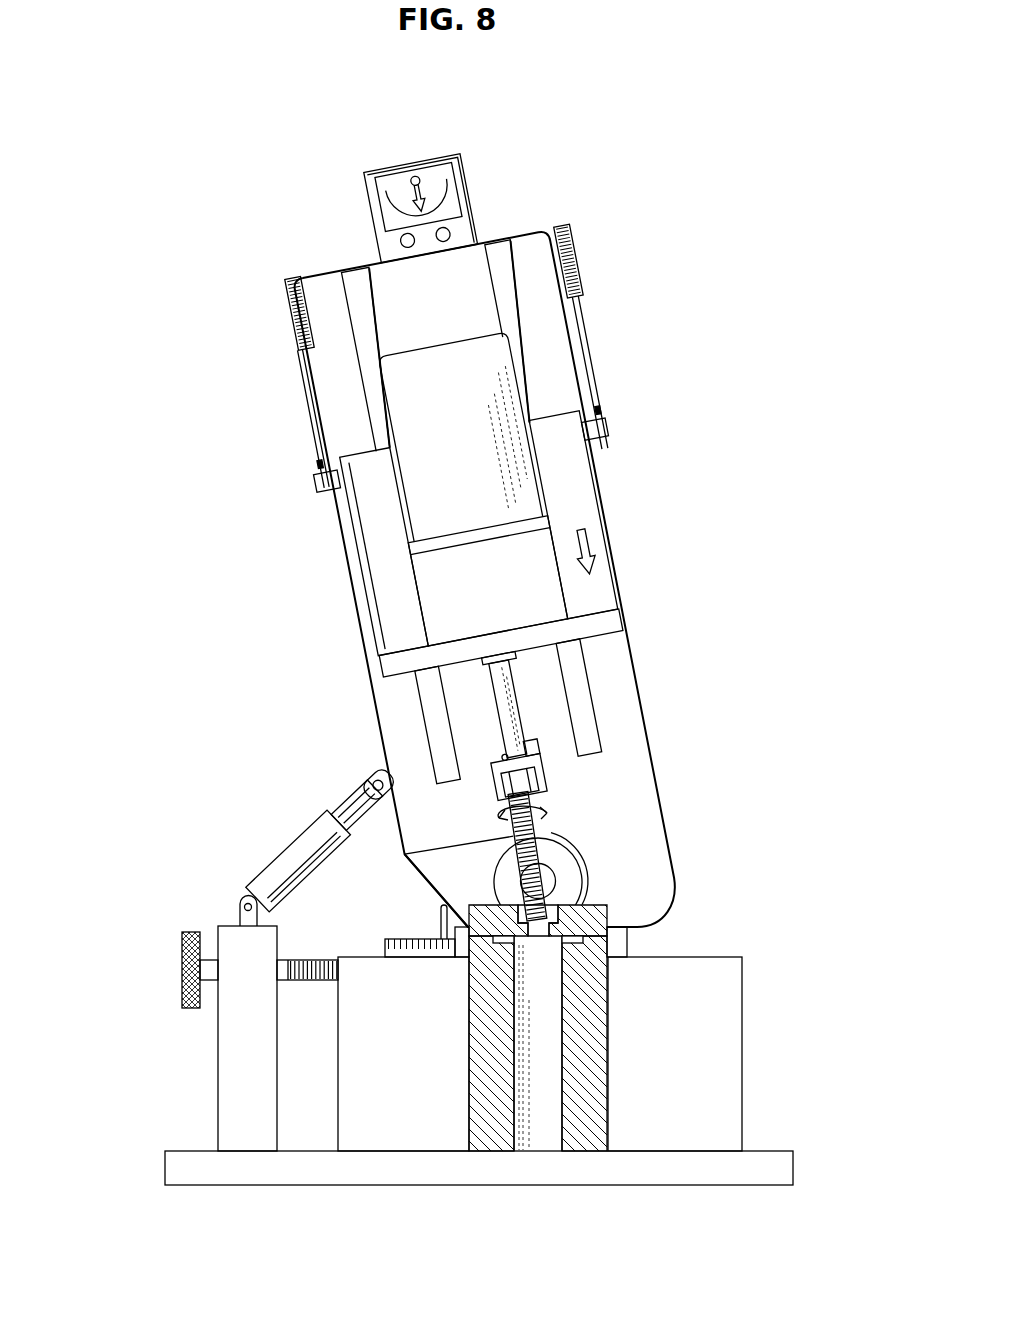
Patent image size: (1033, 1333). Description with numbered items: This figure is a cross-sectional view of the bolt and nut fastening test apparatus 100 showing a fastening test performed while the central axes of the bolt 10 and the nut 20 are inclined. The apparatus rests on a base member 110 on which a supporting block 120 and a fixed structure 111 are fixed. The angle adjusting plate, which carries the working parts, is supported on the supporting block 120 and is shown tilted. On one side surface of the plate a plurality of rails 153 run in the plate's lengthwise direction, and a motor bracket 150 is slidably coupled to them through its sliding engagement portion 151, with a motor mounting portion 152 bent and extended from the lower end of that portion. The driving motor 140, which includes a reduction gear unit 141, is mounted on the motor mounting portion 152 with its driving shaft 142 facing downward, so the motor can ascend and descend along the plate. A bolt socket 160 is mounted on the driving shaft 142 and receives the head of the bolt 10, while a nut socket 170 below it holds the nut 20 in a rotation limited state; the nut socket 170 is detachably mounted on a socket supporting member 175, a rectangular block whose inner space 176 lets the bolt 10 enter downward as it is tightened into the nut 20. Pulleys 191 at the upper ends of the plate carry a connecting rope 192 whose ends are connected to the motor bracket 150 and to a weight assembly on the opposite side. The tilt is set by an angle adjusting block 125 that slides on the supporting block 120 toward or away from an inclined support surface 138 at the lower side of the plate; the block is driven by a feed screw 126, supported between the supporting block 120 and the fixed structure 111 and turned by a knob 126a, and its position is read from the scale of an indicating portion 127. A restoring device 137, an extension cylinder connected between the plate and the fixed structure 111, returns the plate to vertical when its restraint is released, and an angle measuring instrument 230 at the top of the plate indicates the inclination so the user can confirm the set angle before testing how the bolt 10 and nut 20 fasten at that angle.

The bolt and nut fastening test apparatus 100 is at (136, 681).
The bolt 10 is at (548, 848).
The nut 20 is at (585, 880).
The base member 110 is at (417, 1185).
The fixed structure 111 is at (226, 1061).
The supporting block 120 is at (680, 1133).
The angle adjusting block 125 is at (441, 916).
The feed screw 126 is at (313, 987).
The knob 126a is at (182, 950).
The indicating portion 127 is at (397, 957).
The restoring device 137 is at (272, 857).
The inclined support surface 138 is at (420, 867).
The driving motor 140 is at (540, 468).
The reduction gear unit 141 is at (558, 593).
The driving shaft 142 is at (522, 703).
The motor bracket 150 is at (366, 579).
The sliding engagement portion 151 is at (363, 533).
The motor mounting portion 152 is at (380, 667).
The rails 153 is at (355, 288).
The bolt socket 160 is at (547, 777).
The nut socket 170 is at (633, 927).
The socket supporting member 175 is at (598, 1073).
The space 176 is at (560, 1033).
The pulleys 191 is at (290, 292).
The connecting rope 192 is at (302, 381).
The angle measuring instrument 230 is at (428, 175).